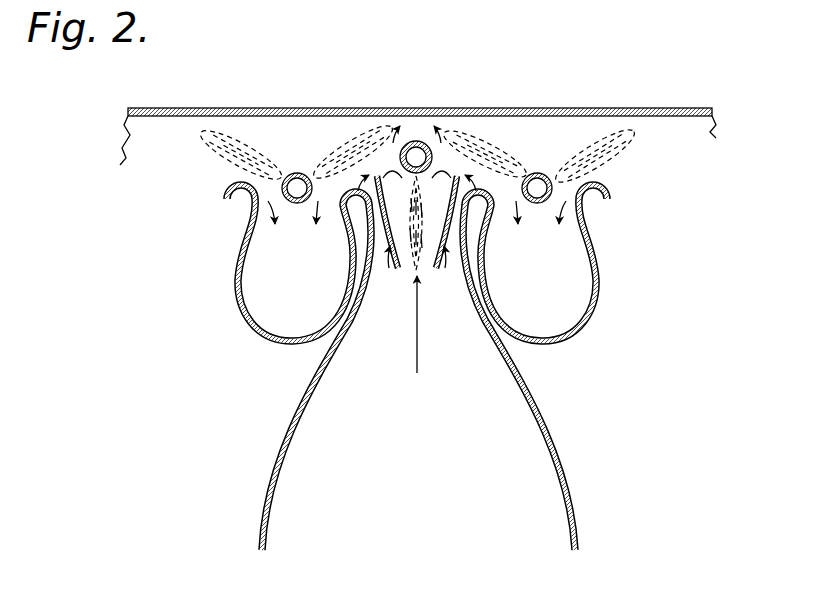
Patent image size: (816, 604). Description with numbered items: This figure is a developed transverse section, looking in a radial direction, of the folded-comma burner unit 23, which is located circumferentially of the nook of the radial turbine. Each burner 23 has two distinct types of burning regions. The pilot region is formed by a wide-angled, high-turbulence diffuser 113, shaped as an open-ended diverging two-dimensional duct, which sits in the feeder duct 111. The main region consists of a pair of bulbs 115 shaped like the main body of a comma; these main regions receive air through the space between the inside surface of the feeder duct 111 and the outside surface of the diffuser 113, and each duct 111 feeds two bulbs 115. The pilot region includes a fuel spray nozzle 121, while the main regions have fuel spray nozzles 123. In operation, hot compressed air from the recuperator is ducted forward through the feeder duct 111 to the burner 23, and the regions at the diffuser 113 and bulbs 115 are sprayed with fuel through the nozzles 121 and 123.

The folded comma burner unit 23 is at (219, 290).
The feeder duct 111 is at (463, 428).
The diffuser 113 is at (397, 219).
The bulbs 115 is at (317, 265).
The fuel spray nozzle 121 is at (414, 141).
The fuel spray nozzles 123 is at (300, 175).